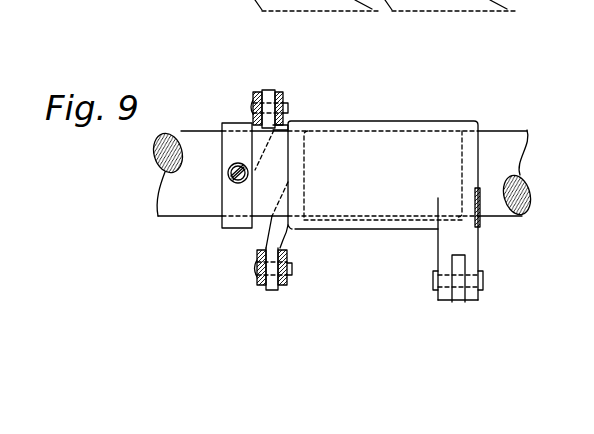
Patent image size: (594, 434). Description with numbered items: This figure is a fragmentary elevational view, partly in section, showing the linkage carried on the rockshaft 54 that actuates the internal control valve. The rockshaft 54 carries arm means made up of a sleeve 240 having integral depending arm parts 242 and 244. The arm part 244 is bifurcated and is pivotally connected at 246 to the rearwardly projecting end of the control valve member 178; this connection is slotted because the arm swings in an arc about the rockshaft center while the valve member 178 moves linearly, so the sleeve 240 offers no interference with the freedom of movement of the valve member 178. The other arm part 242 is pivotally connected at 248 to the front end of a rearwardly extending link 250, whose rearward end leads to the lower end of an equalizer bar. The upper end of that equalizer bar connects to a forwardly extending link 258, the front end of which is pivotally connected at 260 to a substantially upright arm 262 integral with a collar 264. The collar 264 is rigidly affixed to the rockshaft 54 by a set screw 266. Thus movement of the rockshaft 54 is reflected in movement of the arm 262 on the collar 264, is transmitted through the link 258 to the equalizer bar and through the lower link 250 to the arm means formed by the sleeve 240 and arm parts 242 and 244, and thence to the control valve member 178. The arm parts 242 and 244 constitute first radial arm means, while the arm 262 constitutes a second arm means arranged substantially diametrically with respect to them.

The rockshaft 54 is at (500, 131).
The control valve member 178 is at (466, 291).
The sleeve 240 is at (342, 122).
The arm part 242 is at (268, 243).
The arm part 244 is at (470, 238).
The pivotal connection 246 is at (482, 280).
The pivotal connection 248 is at (253, 266).
The link 250 is at (258, 285).
The link 258 is at (256, 92).
The pivotal connection 260 is at (250, 106).
The arm 262 is at (264, 90).
The collar 264 is at (233, 128).
The set screw 266 is at (229, 177).